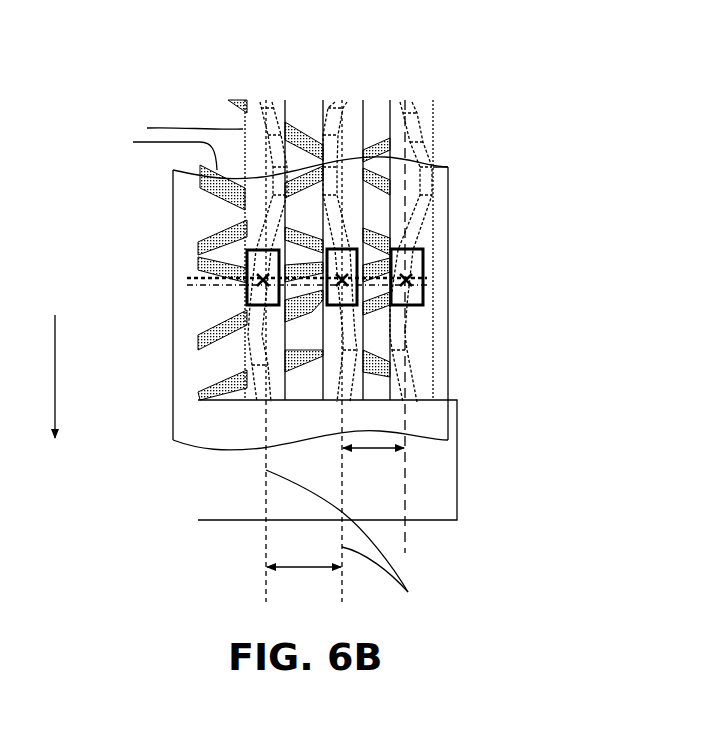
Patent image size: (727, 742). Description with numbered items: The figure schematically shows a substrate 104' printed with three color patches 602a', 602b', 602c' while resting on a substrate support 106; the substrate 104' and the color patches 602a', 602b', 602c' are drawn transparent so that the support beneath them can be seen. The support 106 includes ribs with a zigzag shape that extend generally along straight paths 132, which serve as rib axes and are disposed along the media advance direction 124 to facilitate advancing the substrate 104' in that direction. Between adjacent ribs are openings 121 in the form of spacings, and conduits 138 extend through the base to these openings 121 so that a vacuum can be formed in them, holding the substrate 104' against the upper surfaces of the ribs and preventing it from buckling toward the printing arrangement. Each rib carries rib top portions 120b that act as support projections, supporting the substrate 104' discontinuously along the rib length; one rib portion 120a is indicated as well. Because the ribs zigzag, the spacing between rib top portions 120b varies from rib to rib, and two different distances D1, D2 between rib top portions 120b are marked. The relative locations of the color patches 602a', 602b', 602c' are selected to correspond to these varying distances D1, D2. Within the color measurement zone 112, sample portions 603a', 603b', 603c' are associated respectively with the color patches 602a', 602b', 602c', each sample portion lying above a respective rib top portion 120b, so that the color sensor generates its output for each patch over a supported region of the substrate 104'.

The substrate support 106 is at (232, 98).
The conduits 138 is at (490, 128).
The openings 121 is at (322, 88).
The first fingers 120a is at (410, 101).
The rib top portions 120b is at (395, 350).
The color patch 602a' is at (183, 267).
The color patch 602b' is at (326, 255).
The color patch 602c' is at (444, 272).
The sample portion 603a' is at (226, 293).
The sample portion 603b' is at (304, 311).
The sample portion 603c' is at (372, 311).
The color measurement zone 112 is at (187, 286).
The substrate 104' is at (360, 441).
The media advance direction 124 is at (57, 400).
The straight paths 132 is at (344, 545).
The distance D1 is at (304, 501).
The distance D2 is at (373, 464).